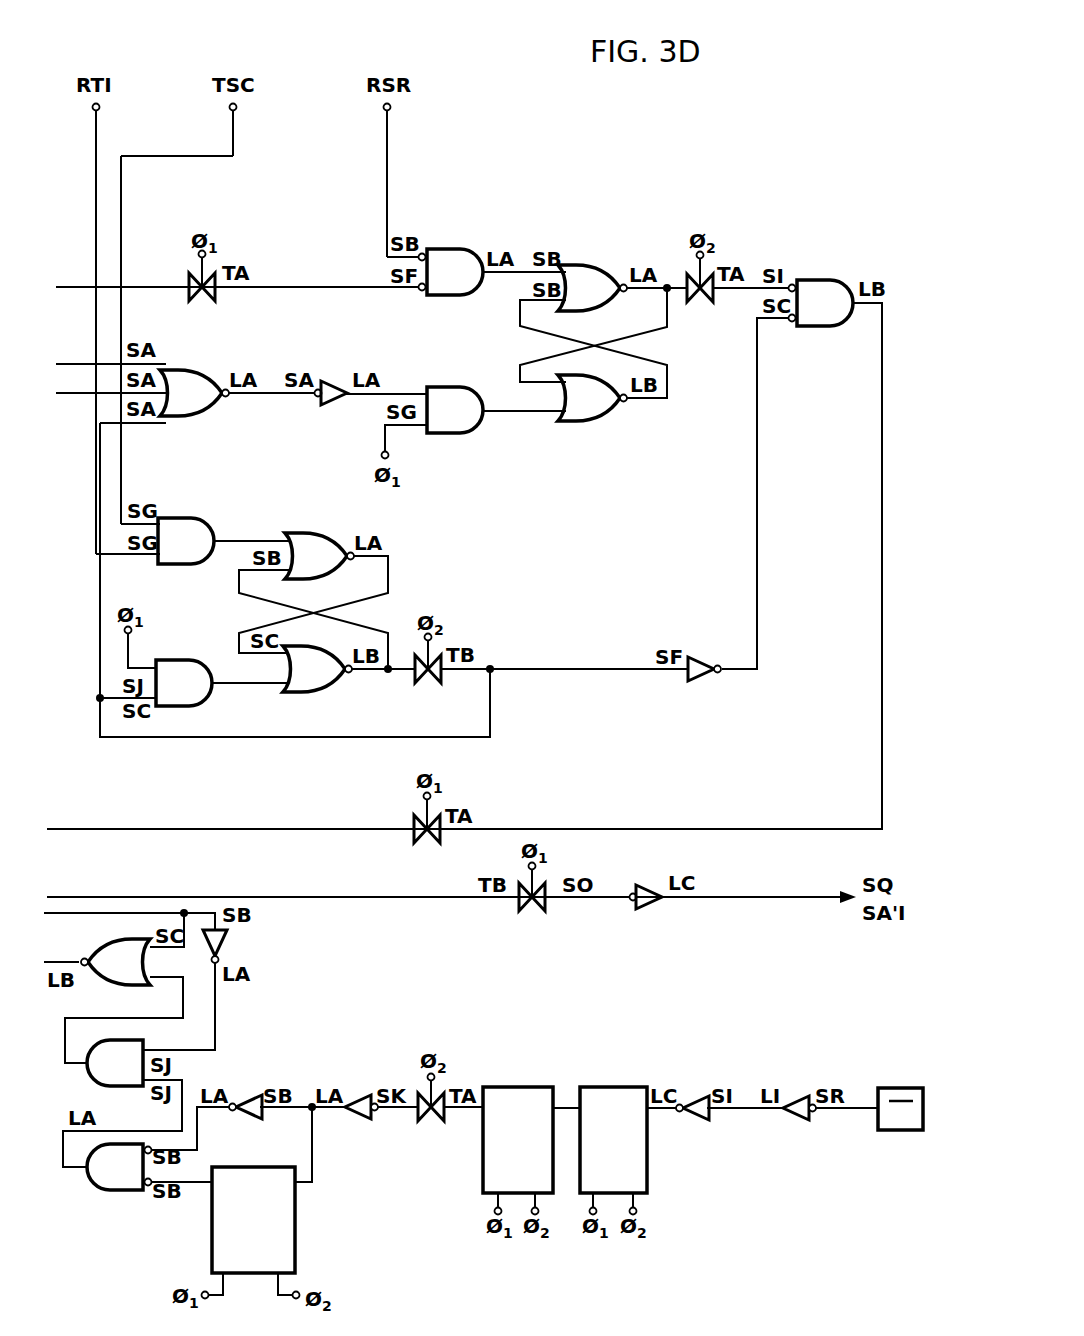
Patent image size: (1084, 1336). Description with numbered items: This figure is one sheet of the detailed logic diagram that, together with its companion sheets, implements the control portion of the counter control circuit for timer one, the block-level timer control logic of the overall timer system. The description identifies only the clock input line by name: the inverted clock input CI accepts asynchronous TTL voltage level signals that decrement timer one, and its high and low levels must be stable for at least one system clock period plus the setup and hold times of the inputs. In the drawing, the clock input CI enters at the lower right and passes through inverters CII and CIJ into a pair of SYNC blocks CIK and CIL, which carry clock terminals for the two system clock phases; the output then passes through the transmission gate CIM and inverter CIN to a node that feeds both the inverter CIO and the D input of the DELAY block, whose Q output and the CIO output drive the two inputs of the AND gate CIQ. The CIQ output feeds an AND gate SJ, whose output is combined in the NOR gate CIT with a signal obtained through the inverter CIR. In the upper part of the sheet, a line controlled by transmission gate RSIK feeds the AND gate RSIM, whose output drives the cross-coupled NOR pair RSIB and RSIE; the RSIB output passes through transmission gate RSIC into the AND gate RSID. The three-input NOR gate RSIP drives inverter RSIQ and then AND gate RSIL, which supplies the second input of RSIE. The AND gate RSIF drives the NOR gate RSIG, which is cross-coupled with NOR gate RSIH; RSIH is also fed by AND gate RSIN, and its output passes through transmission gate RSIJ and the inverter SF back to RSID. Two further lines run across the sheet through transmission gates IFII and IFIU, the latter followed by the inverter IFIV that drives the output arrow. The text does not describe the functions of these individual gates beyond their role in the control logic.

The transmission gate RSIK is at (205, 300).
The AND gate RSIM is at (454, 258).
The NOR gate RSIB is at (592, 274).
The transmission gate RSIC is at (702, 300).
The AND gate RSID is at (821, 289).
The NOR gate RSIP is at (194, 378).
The inverter RSIQ is at (329, 407).
The AND gate RSIL is at (455, 397).
The NOR gate RSIE is at (592, 413).
The AND gate RSIF is at (187, 527).
The NOR gate RSIG is at (319, 542).
The AND gate RSIN is at (184, 671).
The NOR gate RSIH is at (317, 684).
The transmission gate RSIJ is at (427, 684).
The inverter SF is at (704, 669).
The transmission gate IFII is at (423, 843).
The transmission gate IFIU is at (529, 912).
The inverter IFIV is at (650, 880).
The NOR gate CIT is at (113, 949).
The inverter CIR is at (234, 946).
The AND gate producing SJ is at (115, 1063).
The AND gate CIQ is at (119, 1181).
The inverter CIO is at (250, 1091).
The delay flip-flop DELAY is at (253, 1220).
The inverter CIN is at (356, 1091).
The transmission gate CIM is at (430, 1120).
The synchronizer CIL is at (518, 1126).
The synchronizer CIK is at (613, 1126).
The inverter CIJ is at (692, 1092).
The inverter CII is at (795, 1092).
The clock input signal line CI is at (900, 1109).